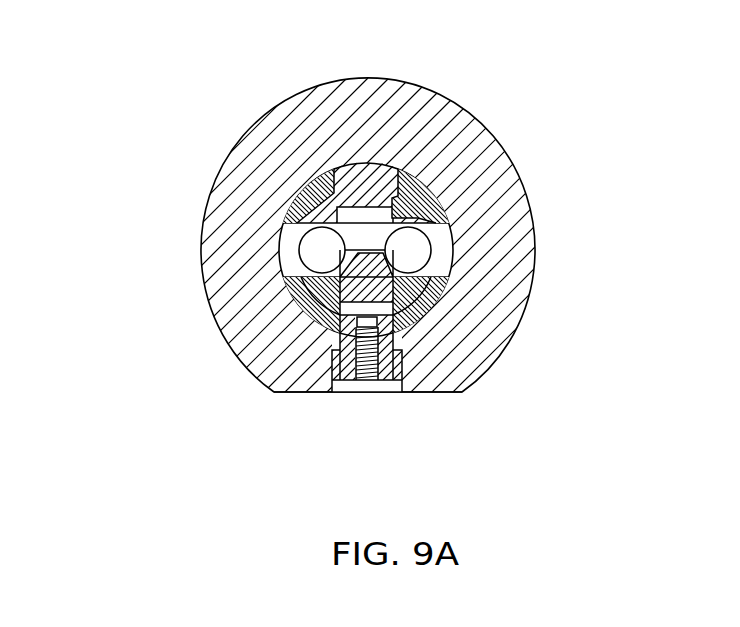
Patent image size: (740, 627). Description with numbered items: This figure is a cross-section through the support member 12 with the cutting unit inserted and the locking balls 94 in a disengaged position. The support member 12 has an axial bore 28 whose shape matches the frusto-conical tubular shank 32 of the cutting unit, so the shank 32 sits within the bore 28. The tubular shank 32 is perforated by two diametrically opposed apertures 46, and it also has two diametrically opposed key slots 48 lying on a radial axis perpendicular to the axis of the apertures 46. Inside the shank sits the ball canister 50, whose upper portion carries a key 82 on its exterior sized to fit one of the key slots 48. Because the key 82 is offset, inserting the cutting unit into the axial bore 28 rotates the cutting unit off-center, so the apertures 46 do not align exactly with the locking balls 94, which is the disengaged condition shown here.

The support member 12 is at (555, 210).
The axial bore 28 is at (280, 224).
The tubular shank 32 is at (333, 192).
The apertures 46 is at (290, 262).
The key slots 48 is at (390, 163).
The ball canister 50 is at (264, 252).
The key 82 is at (380, 160).
The locking balls 94 is at (307, 261).